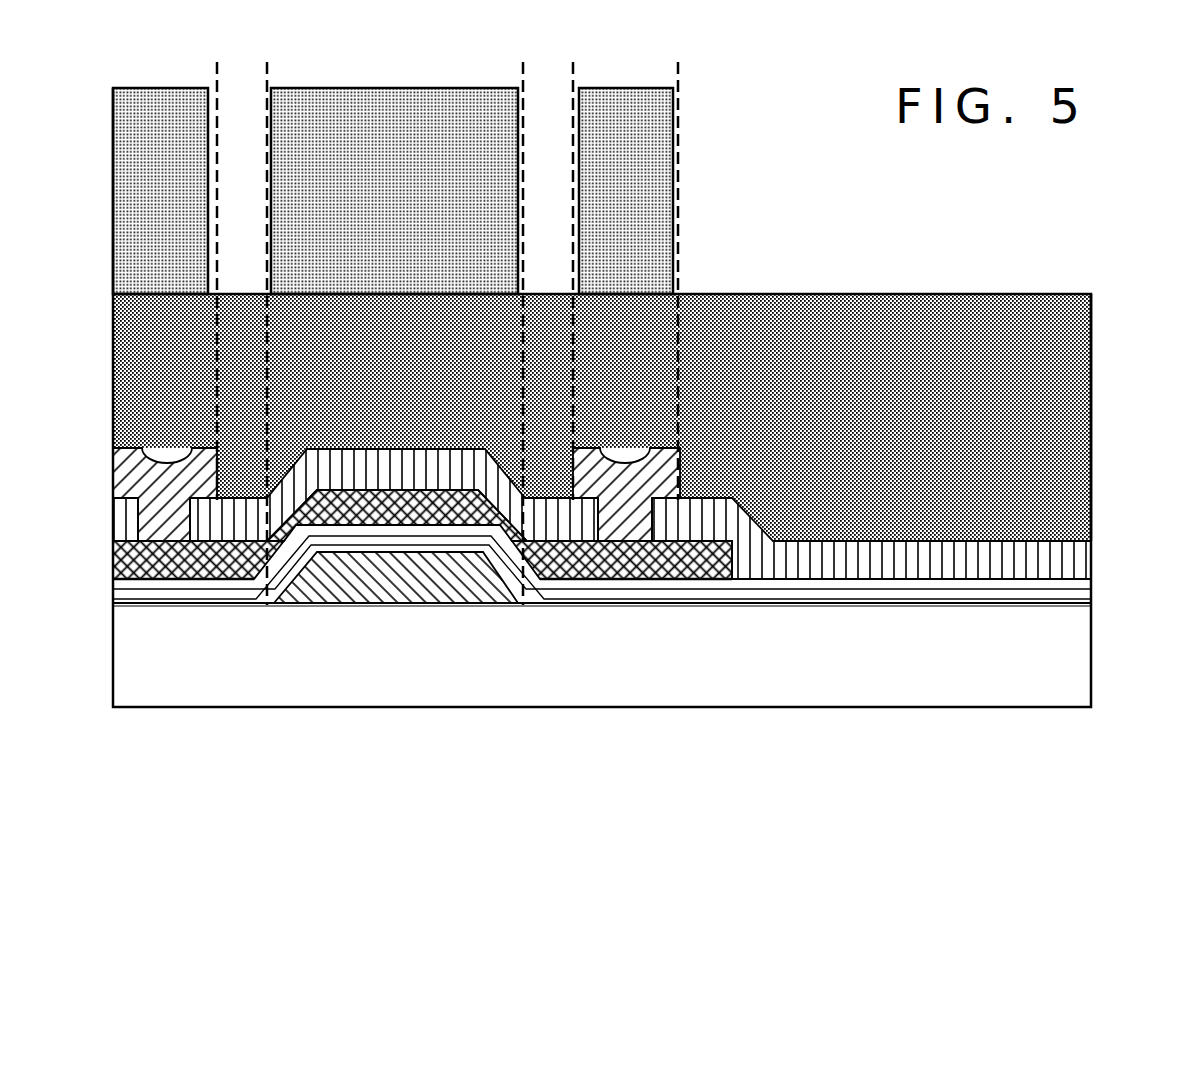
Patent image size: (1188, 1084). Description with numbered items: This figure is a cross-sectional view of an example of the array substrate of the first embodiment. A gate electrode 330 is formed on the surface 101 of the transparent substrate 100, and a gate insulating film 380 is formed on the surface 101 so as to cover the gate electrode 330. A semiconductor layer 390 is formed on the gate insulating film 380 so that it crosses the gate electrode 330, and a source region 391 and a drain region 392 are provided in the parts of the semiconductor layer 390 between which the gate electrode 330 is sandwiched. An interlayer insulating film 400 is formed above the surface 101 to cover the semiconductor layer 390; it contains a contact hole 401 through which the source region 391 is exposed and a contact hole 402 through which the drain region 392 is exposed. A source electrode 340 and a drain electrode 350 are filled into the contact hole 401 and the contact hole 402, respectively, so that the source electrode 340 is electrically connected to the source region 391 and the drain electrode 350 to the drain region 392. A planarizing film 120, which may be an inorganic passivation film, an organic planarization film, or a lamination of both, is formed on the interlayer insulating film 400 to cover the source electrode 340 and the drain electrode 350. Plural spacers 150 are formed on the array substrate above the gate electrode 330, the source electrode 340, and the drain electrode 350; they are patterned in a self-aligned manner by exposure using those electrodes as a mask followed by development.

The transparent substrate 100 is at (1057, 680).
The surface 101 is at (1050, 600).
The planarizing film 120 is at (1045, 357).
The spacers 150 is at (166, 138).
The gate electrode 330 is at (395, 578).
The source electrode 340 is at (165, 495).
The drain electrode 350 is at (625, 495).
The gate insulating film 380 is at (1047, 590).
The semiconductor layer 390 is at (422, 507).
The source region 391 is at (168, 560).
The drain region 392 is at (633, 558).
The interlayer insulating film 400 is at (1045, 556).
The contact hole 401 is at (145, 542).
The contact hole 402 is at (583, 572).